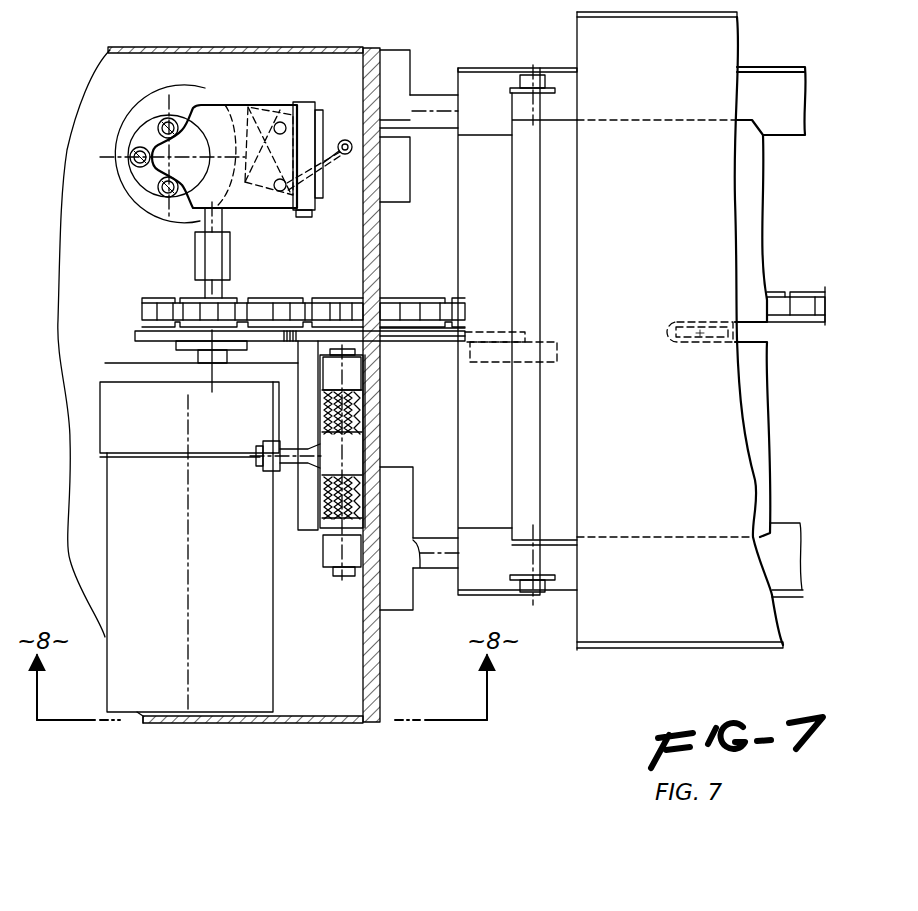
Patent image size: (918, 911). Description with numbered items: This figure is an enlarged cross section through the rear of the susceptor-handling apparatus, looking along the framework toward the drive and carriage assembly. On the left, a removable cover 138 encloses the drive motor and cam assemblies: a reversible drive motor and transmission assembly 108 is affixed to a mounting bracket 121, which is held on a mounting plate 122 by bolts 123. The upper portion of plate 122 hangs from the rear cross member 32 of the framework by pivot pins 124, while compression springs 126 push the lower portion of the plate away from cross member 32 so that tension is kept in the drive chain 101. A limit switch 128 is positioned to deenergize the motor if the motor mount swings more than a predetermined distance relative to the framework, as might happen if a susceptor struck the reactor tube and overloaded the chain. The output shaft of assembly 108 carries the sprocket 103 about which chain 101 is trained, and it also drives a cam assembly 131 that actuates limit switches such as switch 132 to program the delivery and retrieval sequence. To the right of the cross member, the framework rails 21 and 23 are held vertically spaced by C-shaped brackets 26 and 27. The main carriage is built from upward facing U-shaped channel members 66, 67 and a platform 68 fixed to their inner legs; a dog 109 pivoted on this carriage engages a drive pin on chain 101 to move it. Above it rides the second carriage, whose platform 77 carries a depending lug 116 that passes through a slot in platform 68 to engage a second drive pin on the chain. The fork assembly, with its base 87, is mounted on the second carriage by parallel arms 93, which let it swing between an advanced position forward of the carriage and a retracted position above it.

The rail 21 is at (448, 547).
The rail 23 is at (425, 96).
The C-shaped bracket 26 is at (398, 603).
The C-shaped bracket 27 is at (398, 55).
The rear cross member 32 is at (378, 246).
The U-shaped channel member 66 is at (488, 541).
The U-shaped channel member 67 is at (785, 80).
The platform 68 is at (503, 223).
The platform 77 is at (575, 421).
The base 87 is at (580, 265).
The parallel arms 93 is at (560, 105).
The drive chain 101 is at (445, 274).
The sprocket 103 is at (190, 298).
The reversible drive motor and transmission assembly 108 is at (146, 591).
The dog 109 is at (135, 340).
The depending lug 116 is at (697, 343).
The mounting bracket 121 is at (237, 373).
The mounting plate 122 is at (316, 522).
The bolts 123 is at (258, 468).
The pivot pins 124 is at (348, 347).
The compression springs 126 is at (365, 407).
The limit switch 128 is at (349, 140).
The cam assembly 131 is at (128, 199).
The limit switch 132 is at (262, 112).
The removable cover 138 is at (177, 23).